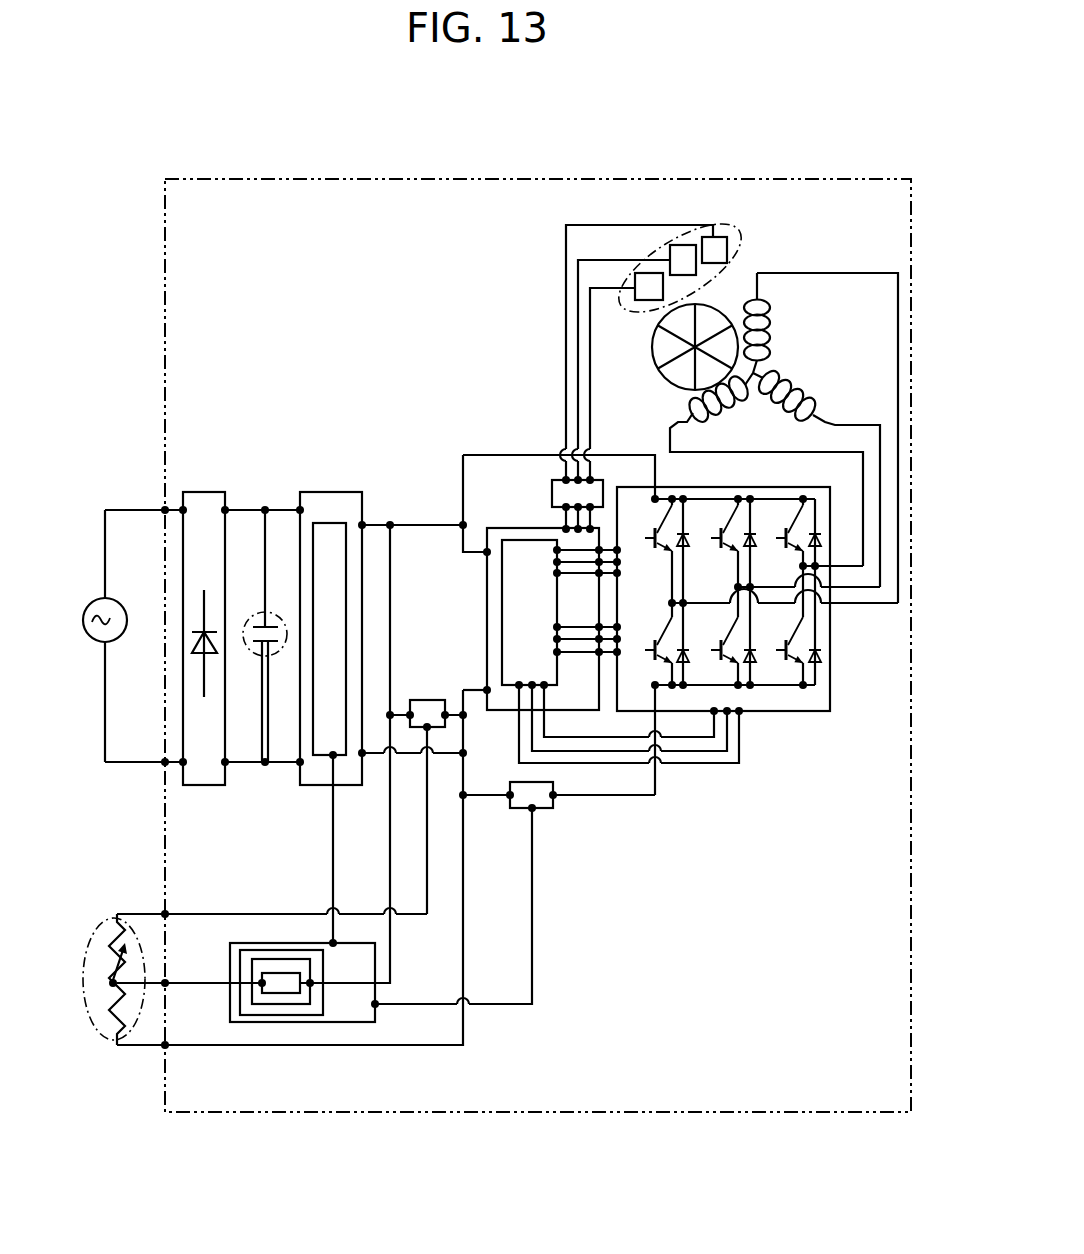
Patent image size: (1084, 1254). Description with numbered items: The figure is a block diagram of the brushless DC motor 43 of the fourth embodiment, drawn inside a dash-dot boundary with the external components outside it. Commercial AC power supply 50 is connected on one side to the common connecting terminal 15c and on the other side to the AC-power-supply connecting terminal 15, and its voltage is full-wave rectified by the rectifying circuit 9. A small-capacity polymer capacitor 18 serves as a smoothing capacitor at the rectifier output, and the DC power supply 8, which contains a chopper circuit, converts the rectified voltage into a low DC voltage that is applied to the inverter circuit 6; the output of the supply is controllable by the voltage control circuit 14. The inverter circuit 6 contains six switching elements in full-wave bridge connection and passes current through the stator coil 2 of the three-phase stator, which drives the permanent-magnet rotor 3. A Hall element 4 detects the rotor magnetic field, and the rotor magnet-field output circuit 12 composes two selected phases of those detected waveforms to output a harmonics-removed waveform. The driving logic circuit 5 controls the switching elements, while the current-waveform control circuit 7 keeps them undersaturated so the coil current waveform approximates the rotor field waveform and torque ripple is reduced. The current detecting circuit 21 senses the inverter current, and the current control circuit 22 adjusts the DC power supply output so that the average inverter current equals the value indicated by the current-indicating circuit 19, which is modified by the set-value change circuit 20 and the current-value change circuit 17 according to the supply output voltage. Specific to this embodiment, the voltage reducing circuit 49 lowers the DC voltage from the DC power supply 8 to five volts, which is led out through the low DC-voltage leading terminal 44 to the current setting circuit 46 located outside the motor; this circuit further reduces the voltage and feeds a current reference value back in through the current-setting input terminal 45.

The stator coil 2 is at (719, 426).
The permanent-magnet rotor 3 is at (655, 333).
The Hall element 4 is at (740, 233).
The driving logic circuit 5 is at (583, 693).
The inverter circuit 6 is at (832, 690).
The current-waveform control circuit 7 is at (547, 657).
The DC power supply 8 is at (325, 492).
The rectifying circuit 9 is at (200, 497).
The rotor magnet-field output circuit 12 is at (563, 480).
The voltage control circuit 14 is at (347, 523).
The AC-power-supply connecting terminal 15 is at (165, 510).
The common connecting terminal 15c is at (165, 762).
The current-value change circuit 17 is at (262, 995).
The polymer capacitor 18 is at (255, 616).
The current-indicating circuit 19 is at (318, 1015).
The set-value change circuit 20 is at (279, 993).
The current detecting circuit 21 is at (523, 798).
The current control circuit 22 is at (372, 1022).
The brushless DC motor 43 is at (527, 180).
The low DC-voltage leading terminal 44 is at (165, 912).
The current-setting input terminal 45 is at (163, 985).
The current setting circuit 46 is at (90, 950).
The voltage reducing circuit 49 is at (420, 700).
The AC power supply 50 is at (96, 596).